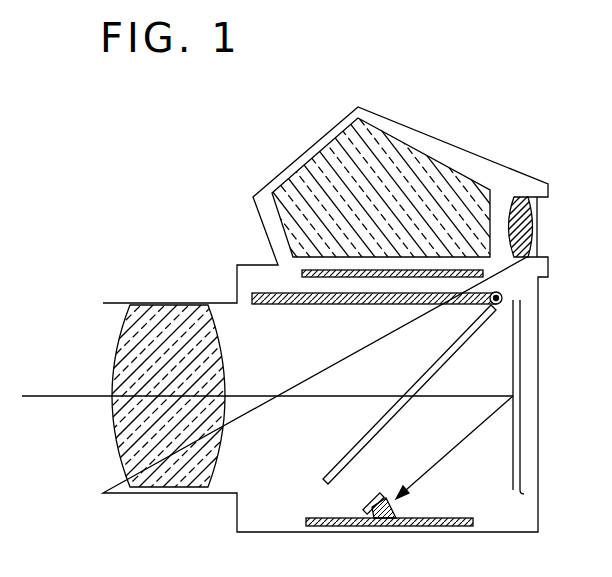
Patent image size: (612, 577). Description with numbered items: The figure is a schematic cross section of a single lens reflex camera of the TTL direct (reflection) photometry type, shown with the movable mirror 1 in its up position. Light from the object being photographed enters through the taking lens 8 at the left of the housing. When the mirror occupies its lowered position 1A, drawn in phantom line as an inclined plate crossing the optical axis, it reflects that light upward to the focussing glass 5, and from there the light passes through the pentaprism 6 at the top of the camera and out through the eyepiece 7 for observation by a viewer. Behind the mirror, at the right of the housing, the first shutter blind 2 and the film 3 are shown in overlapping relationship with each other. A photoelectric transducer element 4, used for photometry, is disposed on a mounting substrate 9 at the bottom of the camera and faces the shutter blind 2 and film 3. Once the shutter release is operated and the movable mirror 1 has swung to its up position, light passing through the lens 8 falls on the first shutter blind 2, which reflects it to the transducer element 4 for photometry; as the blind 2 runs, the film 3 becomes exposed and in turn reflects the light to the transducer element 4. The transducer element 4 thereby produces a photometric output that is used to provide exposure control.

The movable mirror 1 is at (337, 305).
The phantom line position of movable mirror 1A is at (416, 379).
The first shutter blind 2 is at (512, 454).
The film 3 is at (522, 409).
The photoelectric transducer element 4 is at (392, 506).
The focussing glass 5 is at (303, 273).
The pentaprism 6 is at (318, 160).
The eyepiece 7 is at (528, 225).
The taking lens 8 is at (122, 337).
The mounting substrate 9 is at (464, 518).